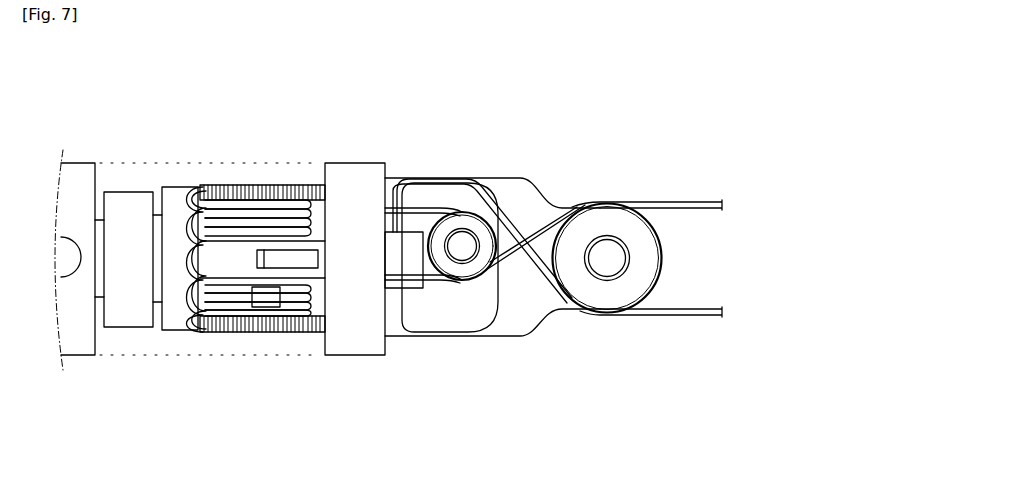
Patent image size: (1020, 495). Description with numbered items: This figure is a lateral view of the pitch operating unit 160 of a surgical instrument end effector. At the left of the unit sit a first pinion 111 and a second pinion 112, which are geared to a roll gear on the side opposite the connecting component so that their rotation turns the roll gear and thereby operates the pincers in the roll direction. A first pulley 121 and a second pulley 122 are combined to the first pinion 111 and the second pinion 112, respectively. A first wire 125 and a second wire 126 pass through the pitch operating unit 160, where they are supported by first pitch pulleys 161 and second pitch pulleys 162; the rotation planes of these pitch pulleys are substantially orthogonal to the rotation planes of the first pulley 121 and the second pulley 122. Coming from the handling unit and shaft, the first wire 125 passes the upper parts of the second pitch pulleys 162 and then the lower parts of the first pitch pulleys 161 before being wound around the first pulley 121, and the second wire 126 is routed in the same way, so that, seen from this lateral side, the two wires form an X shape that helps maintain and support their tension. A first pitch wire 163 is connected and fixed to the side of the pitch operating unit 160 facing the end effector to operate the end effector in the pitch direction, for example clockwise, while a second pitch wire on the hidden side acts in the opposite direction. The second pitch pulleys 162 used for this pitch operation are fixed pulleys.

The first pinion 111 is at (227, 334).
The second pinion 112 is at (225, 184).
The first pulley 121 is at (310, 334).
The second pulley 122 is at (292, 182).
The first wire 125 is at (690, 200).
The second wire 126 is at (694, 317).
The pitch operating unit 160 is at (530, 370).
The first pitch pulleys 161 is at (452, 300).
The second pitch pulleys 162 is at (596, 302).
The first pitch wire 163 is at (478, 178).